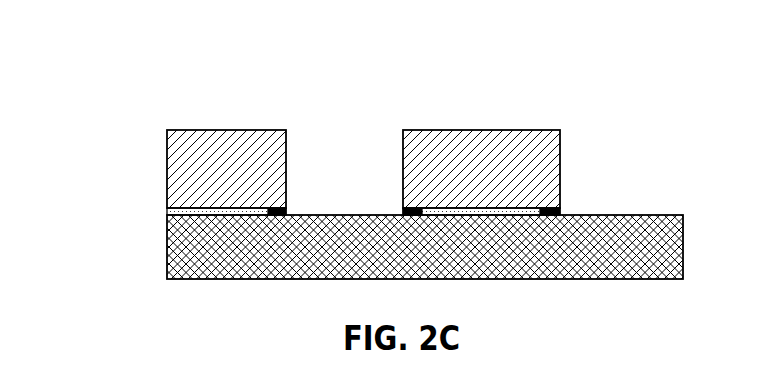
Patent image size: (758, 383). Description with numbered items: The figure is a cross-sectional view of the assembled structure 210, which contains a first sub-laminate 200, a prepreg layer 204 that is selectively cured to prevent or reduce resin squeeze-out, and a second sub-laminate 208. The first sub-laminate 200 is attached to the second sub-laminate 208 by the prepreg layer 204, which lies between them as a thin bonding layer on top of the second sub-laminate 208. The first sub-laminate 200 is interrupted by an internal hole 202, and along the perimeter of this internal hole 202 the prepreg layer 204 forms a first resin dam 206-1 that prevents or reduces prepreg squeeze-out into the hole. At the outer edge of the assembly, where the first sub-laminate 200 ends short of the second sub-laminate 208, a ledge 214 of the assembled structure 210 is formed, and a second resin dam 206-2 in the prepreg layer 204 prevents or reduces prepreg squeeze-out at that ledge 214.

The first sub-laminate 200 is at (227, 130).
The internal hole 202 is at (343, 118).
The prepreg layer 204 is at (170, 212).
The first resin dam 206-1 is at (403, 212).
The second resin dam 206-2 is at (560, 212).
The second sub-laminate 208 is at (168, 250).
The assembled structure 210 is at (610, 90).
The ledge 214 is at (637, 166).